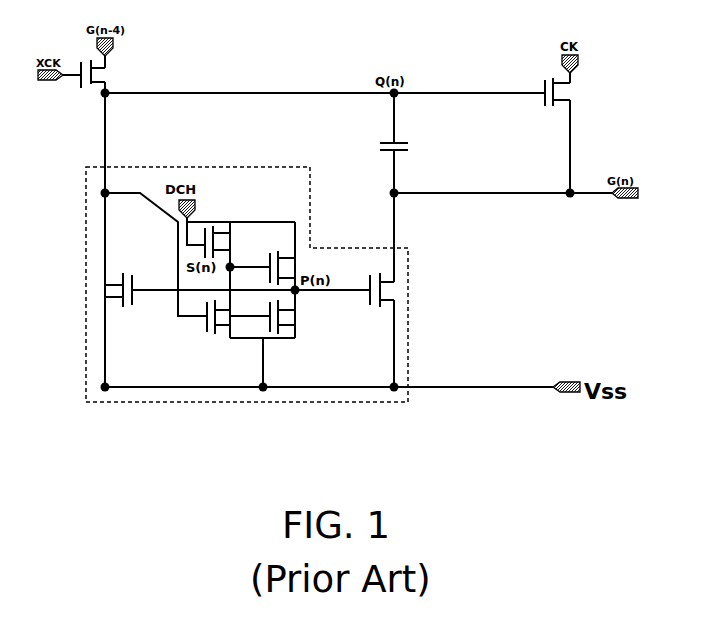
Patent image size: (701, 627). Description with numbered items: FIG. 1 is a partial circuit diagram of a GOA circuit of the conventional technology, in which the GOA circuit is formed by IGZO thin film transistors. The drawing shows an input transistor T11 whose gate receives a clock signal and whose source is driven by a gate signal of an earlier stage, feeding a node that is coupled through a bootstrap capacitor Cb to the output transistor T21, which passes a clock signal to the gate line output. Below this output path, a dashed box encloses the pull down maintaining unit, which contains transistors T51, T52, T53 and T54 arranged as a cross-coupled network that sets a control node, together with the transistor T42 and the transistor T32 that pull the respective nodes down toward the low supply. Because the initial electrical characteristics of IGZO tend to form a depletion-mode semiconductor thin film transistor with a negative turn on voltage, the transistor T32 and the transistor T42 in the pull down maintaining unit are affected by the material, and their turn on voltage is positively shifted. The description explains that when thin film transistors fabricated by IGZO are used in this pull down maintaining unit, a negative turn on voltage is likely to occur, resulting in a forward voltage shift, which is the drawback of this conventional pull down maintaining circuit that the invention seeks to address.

The first transistor (input, gated by XCK) T11 is at (113, 74).
The output transistor (gated by Q(n), CK input) T21 is at (537, 90).
The bootstrap capacitor Cb is at (382, 148).
The transistor T51 (DCH input) T51 is at (227, 229).
The transistor T52 is at (215, 328).
The transistor T53 is at (275, 261).
The transistor T54 is at (281, 331).
The transistor T42 is at (122, 302).
The transistor T32 is at (377, 302).